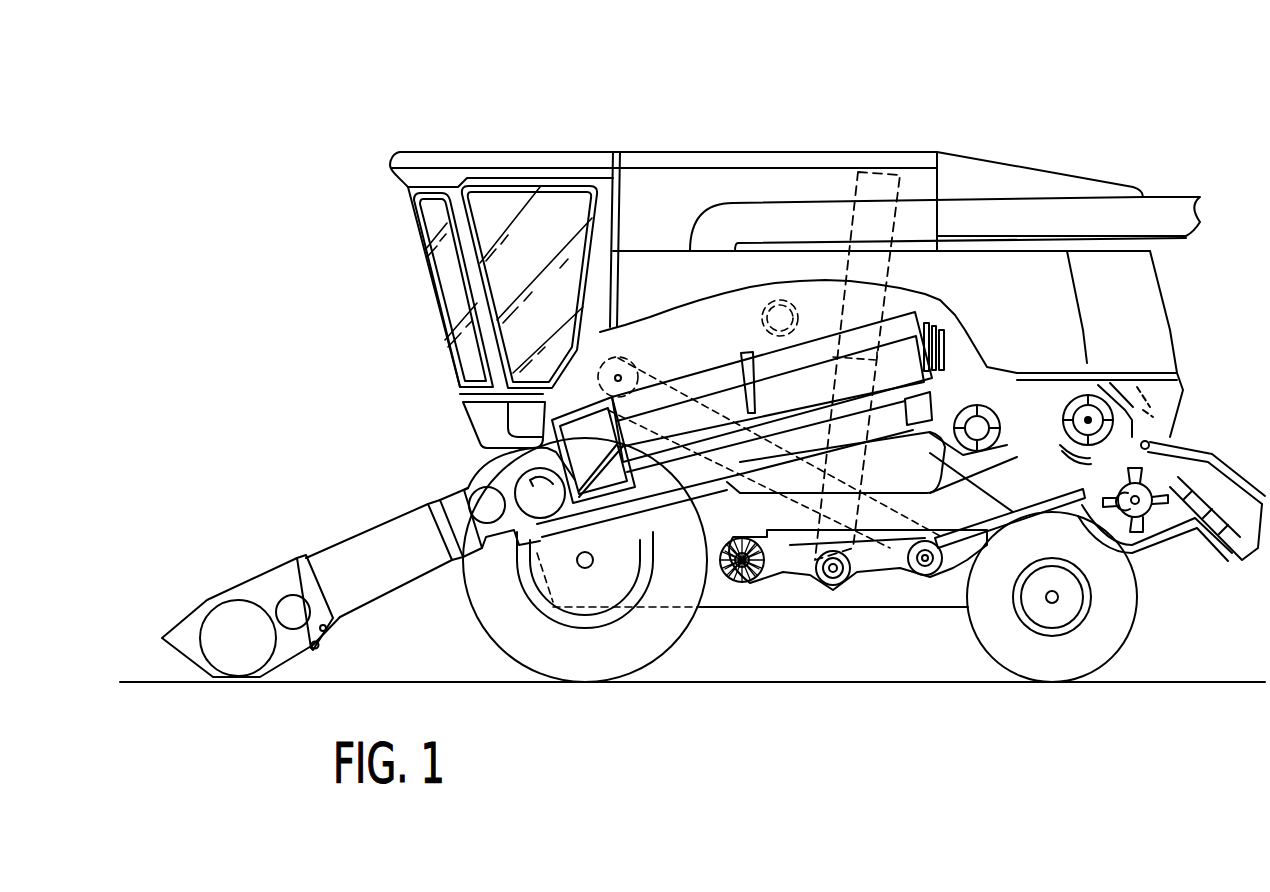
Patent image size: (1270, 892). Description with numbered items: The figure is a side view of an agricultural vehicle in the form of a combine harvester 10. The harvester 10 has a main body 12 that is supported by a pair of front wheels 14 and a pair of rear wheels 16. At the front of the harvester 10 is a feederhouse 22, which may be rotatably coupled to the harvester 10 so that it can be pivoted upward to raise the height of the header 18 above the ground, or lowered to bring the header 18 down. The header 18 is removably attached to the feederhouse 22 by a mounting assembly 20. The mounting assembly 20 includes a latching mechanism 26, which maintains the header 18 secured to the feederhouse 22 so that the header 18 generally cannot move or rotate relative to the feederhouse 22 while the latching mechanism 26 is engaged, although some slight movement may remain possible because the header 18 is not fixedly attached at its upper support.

The harvester 10 is at (1040, 137).
The main body 12 is at (781, 270).
The front wheels 14 is at (592, 657).
The rear wheels 16 is at (1050, 663).
The header 18 is at (192, 623).
The mounting assembly 20 is at (290, 557).
The feederhouse 22 is at (370, 543).
The latching mechanism 26 is at (320, 644).